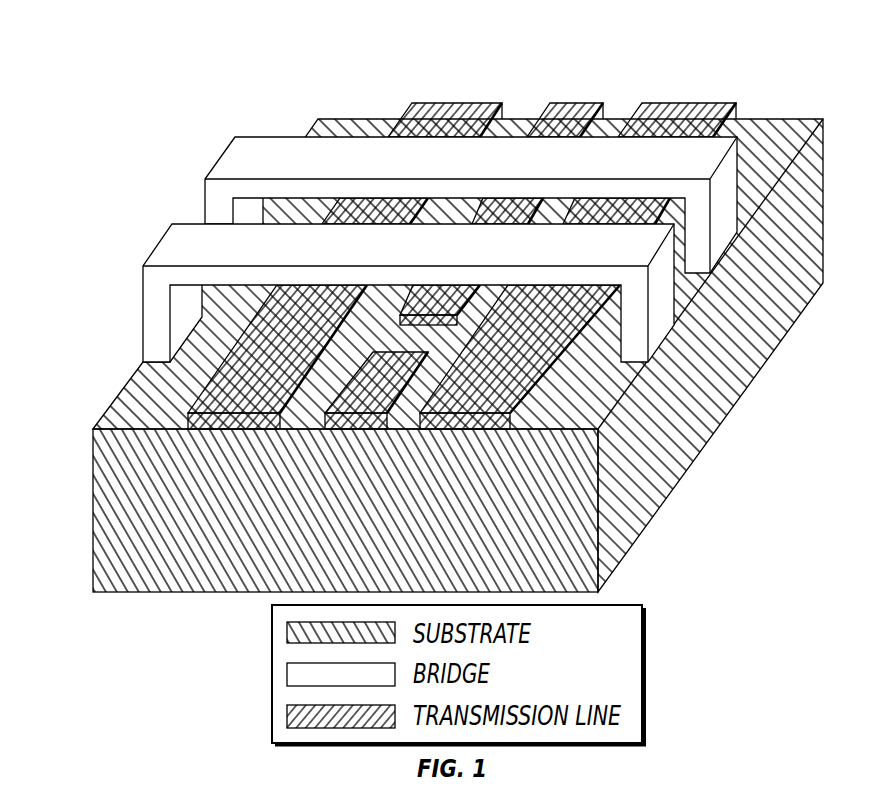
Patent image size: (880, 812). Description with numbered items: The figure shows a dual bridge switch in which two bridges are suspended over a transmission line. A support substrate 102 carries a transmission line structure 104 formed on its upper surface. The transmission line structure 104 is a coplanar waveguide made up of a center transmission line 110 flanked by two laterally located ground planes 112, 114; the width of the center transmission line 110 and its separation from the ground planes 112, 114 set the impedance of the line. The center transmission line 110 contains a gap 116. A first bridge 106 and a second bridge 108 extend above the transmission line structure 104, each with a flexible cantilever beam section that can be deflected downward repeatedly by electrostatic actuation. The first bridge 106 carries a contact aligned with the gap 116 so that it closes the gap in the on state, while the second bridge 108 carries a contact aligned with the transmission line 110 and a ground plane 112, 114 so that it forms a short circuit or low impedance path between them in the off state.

The support substrate 102 is at (117, 516).
The transmission line structure 104 is at (737, 65).
The first bridge 106 is at (165, 255).
The second bridge 108 is at (226, 167).
The center transmission line 110 is at (478, 245).
The ground plane 112 is at (447, 103).
The ground plane 114 is at (662, 103).
The gap 116 is at (388, 338).